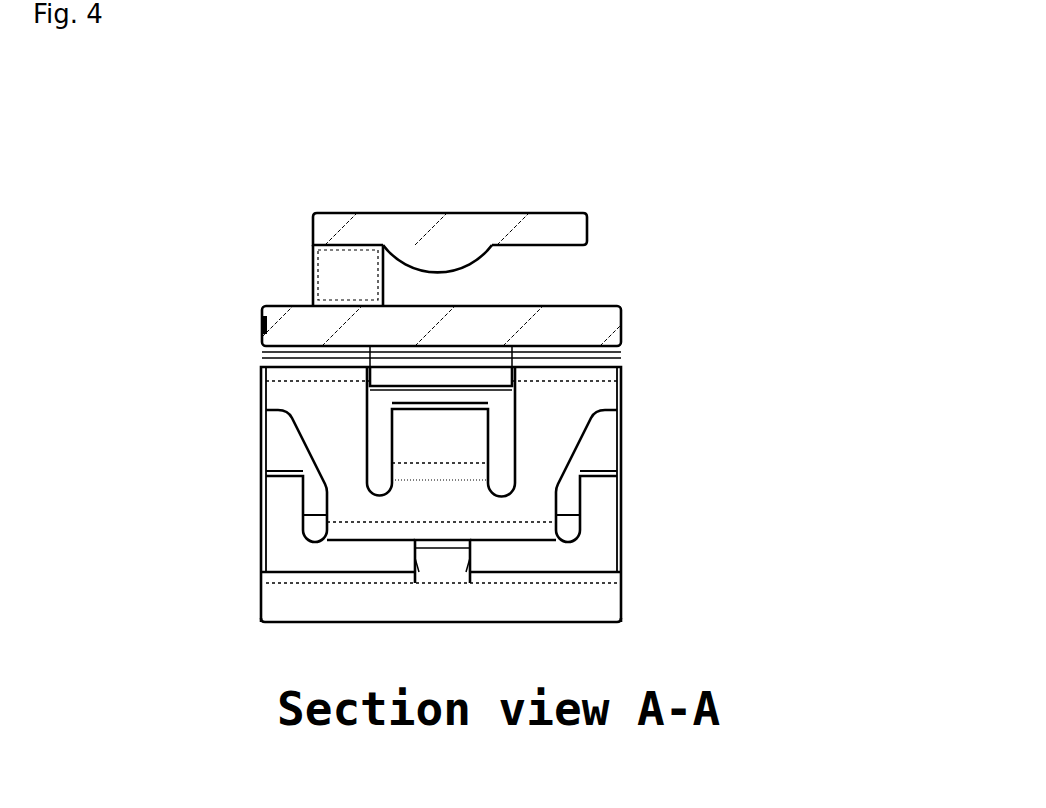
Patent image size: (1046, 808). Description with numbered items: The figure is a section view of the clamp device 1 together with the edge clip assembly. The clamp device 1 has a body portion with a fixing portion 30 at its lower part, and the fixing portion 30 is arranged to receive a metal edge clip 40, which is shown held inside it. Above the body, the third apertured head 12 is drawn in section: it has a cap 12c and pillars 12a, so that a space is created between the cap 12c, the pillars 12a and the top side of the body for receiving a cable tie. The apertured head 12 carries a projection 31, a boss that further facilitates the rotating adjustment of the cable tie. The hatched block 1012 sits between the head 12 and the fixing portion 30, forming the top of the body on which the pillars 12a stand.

The clamp device 1 is at (220, 454).
The third apertured head 12 is at (500, 223).
The pillars 12a is at (360, 270).
The cap 12c is at (433, 223).
The projections 31 is at (453, 252).
The base block 1012 is at (478, 307).
The metal edge clip 40 is at (567, 453).
The fixing portion 30 is at (590, 612).